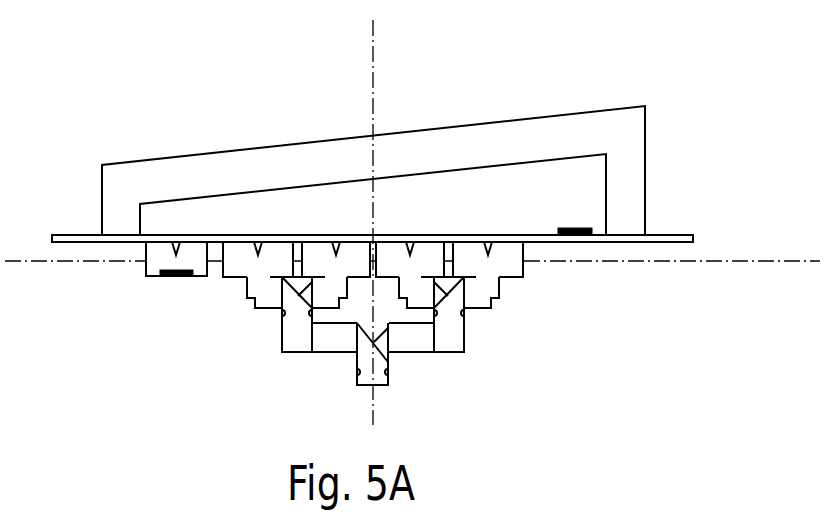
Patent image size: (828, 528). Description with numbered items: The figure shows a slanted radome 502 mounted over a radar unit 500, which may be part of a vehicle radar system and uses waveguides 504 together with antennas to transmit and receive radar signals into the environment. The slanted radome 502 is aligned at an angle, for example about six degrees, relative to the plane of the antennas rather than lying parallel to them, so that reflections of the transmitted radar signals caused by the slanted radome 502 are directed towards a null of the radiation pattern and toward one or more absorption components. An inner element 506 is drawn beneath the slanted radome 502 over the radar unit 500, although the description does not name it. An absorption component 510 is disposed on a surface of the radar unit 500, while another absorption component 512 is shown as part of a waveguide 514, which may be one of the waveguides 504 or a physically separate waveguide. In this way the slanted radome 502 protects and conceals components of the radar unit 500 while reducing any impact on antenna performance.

The radar unit 500 is at (118, 82).
The slanted radome 502 is at (647, 135).
The waveguides 504 is at (552, 315).
The inner housing 506 is at (606, 213).
The absorption component 510 is at (580, 237).
The absorption component 512 is at (162, 276).
The waveguide 514 is at (146, 264).